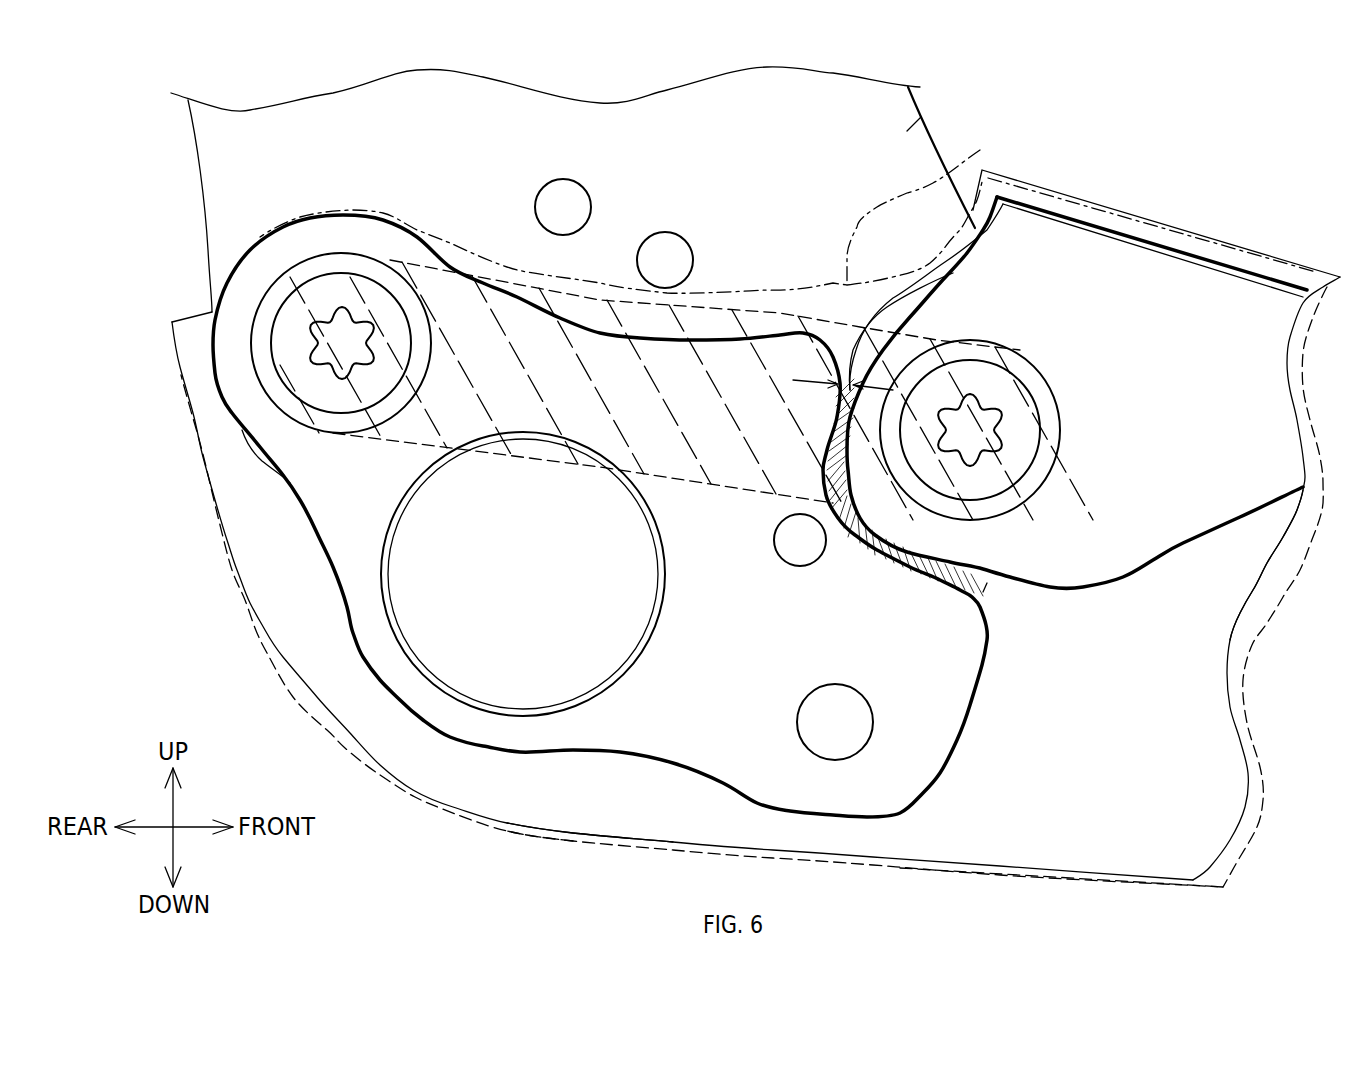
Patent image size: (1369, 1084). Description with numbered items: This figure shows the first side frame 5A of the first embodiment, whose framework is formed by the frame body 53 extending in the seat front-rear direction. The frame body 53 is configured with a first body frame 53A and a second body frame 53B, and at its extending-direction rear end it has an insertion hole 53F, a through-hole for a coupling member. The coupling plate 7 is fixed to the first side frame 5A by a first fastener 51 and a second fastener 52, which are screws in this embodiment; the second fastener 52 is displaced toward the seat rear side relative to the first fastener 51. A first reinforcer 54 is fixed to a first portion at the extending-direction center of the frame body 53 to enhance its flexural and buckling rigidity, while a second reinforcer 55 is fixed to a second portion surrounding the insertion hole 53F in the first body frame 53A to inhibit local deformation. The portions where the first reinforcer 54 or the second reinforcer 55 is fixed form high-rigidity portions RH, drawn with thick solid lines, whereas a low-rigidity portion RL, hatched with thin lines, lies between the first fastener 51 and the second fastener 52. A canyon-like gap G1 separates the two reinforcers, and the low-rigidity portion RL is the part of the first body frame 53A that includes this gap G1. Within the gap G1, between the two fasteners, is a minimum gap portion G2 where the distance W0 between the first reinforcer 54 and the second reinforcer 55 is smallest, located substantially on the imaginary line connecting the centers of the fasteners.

The first side frame 5A is at (1246, 145).
The coupling plate 7 is at (921, 115).
The first fastener 51 is at (993, 383).
The second fastener 52 is at (285, 315).
The frame body 53 is at (1061, 877).
The first body frame 53A is at (980, 150).
The second body frame 53B is at (1040, 797).
The insertion hole 53F is at (487, 700).
The first reinforcer 54 is at (1183, 323).
The second reinforcer 55 is at (357, 479).
The high-rigidity portion RH is at (621, 752).
The low-rigidity portion RL is at (987, 583).
The gap G1 is at (985, 587).
The minimum gap portion G2 is at (953, 273).
The distance W0 is at (836, 370).